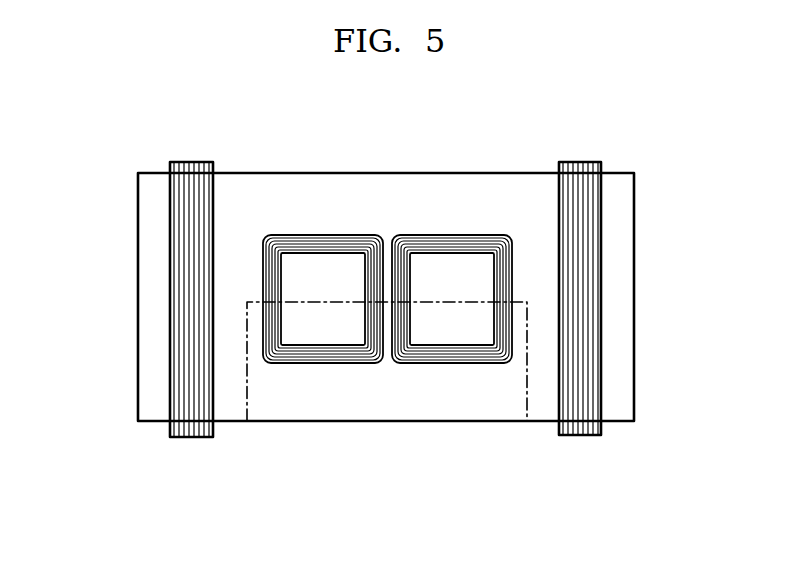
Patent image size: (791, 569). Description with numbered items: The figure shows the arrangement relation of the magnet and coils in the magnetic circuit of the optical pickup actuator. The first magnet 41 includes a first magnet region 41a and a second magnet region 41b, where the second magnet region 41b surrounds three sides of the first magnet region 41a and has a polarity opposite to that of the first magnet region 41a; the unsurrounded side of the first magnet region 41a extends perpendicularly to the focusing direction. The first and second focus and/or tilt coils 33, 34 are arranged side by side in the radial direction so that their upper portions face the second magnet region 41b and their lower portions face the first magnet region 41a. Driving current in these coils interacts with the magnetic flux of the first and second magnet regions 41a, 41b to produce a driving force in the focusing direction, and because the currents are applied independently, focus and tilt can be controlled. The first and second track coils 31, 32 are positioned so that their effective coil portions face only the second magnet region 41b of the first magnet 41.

The first track coil 31 is at (187, 234).
The second track coil 32 is at (583, 236).
The first focus and/or tilt coil 33 is at (325, 235).
The second focus and/or tilt coil 34 is at (458, 235).
The first magnet 41 is at (256, 160).
The first magnet region 41a is at (389, 403).
The second magnet region 41b is at (612, 323).